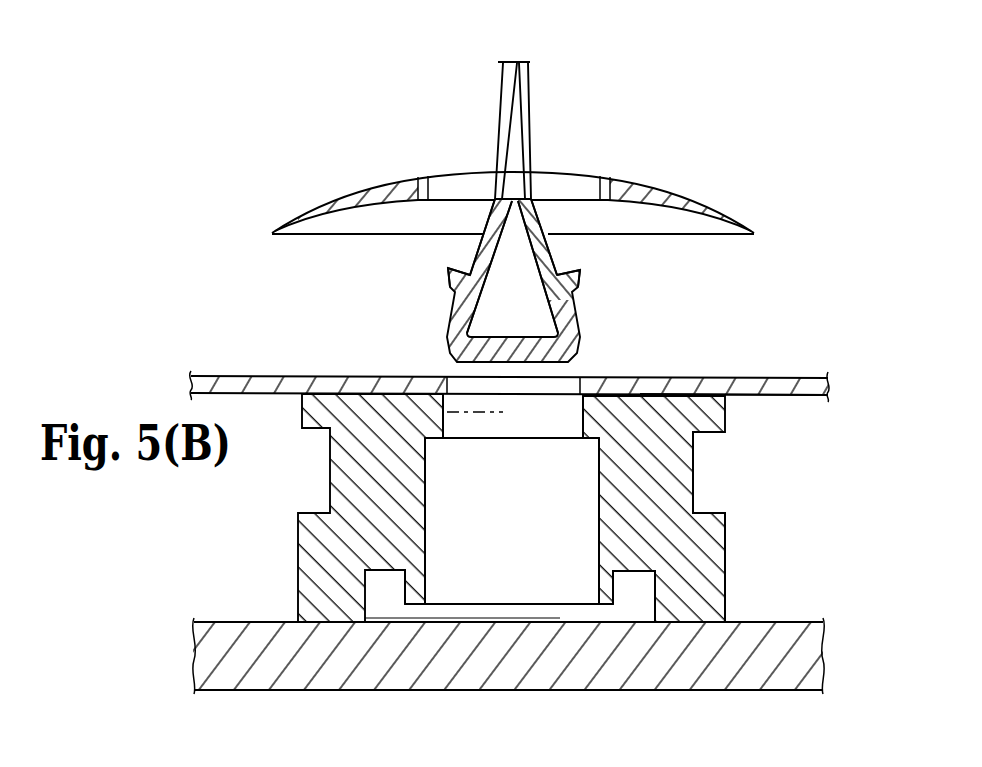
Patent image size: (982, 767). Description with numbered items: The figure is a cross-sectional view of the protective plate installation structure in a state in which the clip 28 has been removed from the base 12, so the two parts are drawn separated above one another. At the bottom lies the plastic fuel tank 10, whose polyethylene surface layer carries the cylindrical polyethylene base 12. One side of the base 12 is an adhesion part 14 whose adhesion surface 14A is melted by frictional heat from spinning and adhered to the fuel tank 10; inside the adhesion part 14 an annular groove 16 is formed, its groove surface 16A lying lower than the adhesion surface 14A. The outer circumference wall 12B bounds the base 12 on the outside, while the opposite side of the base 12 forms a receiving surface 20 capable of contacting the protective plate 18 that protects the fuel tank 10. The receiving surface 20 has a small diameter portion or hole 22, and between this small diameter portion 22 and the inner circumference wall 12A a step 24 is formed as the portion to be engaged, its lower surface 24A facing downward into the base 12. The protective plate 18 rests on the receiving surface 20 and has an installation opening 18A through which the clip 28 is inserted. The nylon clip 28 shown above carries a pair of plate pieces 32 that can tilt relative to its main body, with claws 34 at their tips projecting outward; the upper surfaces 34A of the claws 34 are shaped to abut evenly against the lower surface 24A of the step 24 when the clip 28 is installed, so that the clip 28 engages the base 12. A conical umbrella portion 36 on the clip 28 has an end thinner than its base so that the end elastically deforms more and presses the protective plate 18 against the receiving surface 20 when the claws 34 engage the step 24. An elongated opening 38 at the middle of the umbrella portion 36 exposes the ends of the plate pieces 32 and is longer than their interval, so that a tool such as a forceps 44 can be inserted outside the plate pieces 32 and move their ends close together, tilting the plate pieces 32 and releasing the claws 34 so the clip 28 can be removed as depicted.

The plastic fuel tank 10 is at (807, 651).
The base 12 is at (729, 548).
The inner circumference wall 12A is at (600, 558).
The outer circumference wall 12B is at (725, 530).
The adhesion part 14 is at (700, 604).
The adhesion surface 14A is at (717, 641).
The annular groove 16 is at (662, 592).
The groove surface 16A is at (607, 592).
The protective plate 18 is at (829, 390).
The installation opening 18A is at (571, 377).
The receiving surface 20 is at (705, 388).
The small diameter portion 22 is at (441, 402).
The step 24 is at (588, 443).
The lower surface of the step 24A is at (601, 467).
The clip 28 is at (649, 175).
The plate pieces 32 is at (490, 222).
The claws 34 is at (450, 296).
The upper surfaces of the claws 34A is at (452, 267).
The umbrella portion 36 is at (690, 203).
The opening 38 is at (609, 192).
The forceps 44 is at (530, 73).